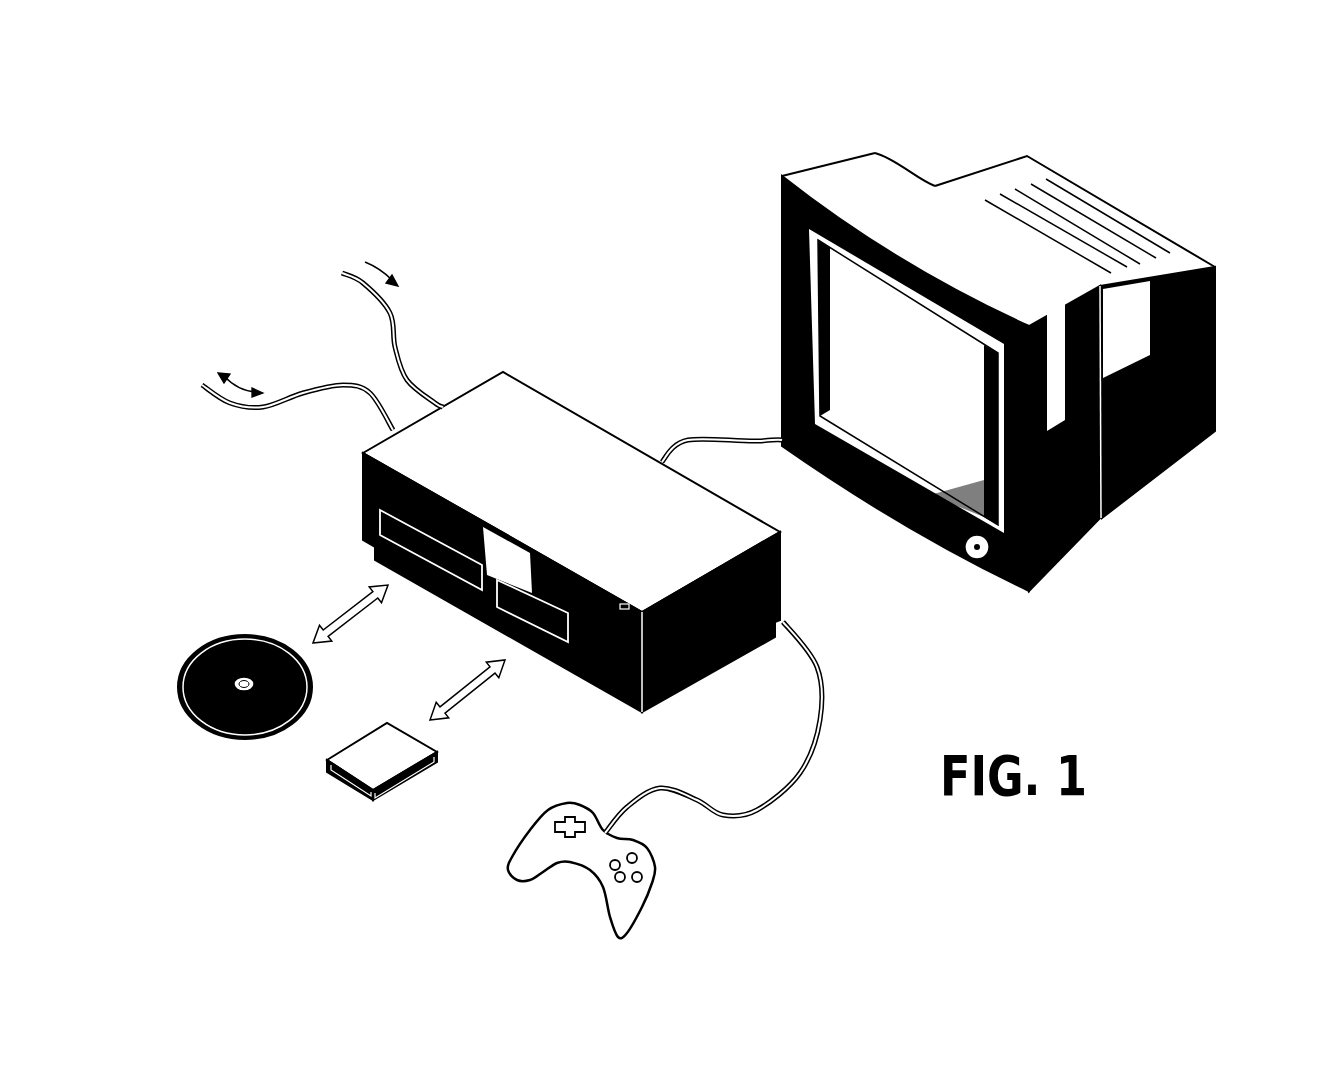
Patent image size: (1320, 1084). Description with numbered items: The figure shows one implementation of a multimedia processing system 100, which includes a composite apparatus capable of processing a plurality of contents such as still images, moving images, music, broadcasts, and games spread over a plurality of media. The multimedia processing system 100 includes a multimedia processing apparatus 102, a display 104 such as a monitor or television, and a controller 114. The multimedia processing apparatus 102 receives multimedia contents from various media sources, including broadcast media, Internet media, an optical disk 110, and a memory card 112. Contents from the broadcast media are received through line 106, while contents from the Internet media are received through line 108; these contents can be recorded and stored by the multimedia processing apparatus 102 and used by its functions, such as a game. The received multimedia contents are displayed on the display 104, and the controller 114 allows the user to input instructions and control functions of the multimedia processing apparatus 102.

The multimedia processing system 100 is at (492, 188).
The multimedia processing apparatus 102 is at (571, 529).
The display 104 is at (960, 372).
The line 106 is at (431, 322).
The line 108 is at (266, 410).
The optical disk 110 is at (253, 656).
The memory card 112 is at (370, 754).
The controller 114 is at (665, 782).